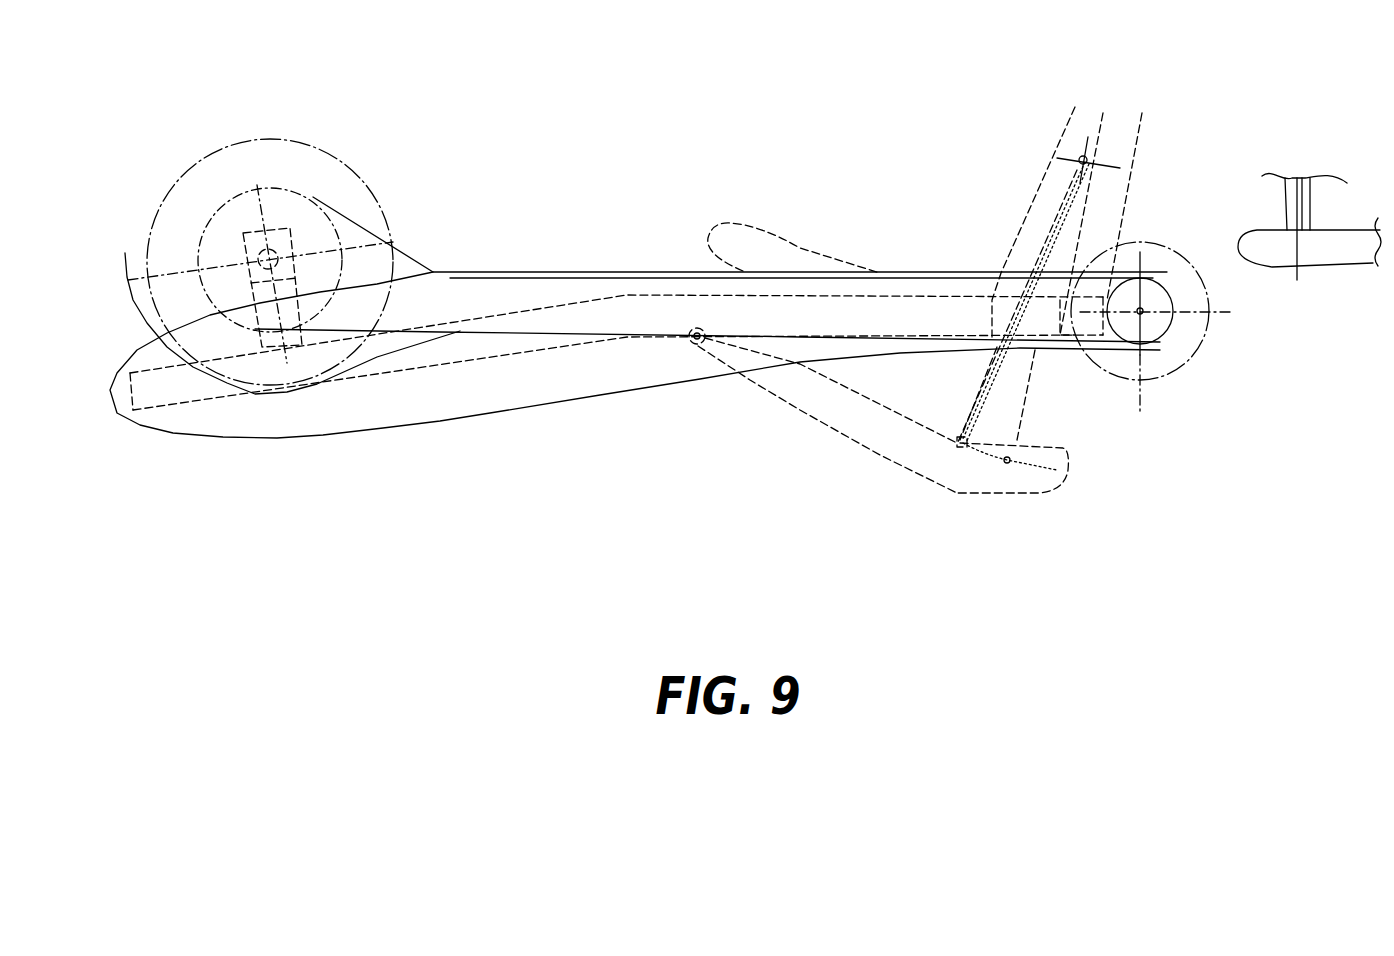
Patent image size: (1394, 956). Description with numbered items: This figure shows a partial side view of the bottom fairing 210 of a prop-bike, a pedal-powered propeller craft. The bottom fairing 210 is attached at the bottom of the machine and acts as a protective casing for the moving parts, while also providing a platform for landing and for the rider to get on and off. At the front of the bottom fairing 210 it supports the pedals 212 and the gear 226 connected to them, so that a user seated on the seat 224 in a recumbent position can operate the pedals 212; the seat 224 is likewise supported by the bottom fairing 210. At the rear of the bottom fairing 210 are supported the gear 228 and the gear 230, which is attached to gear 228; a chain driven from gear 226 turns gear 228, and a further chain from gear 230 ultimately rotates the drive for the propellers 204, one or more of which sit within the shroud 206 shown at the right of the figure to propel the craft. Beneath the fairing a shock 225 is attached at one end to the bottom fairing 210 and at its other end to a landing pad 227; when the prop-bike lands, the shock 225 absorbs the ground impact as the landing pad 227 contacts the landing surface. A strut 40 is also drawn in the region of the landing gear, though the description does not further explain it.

The bottom fairing 210 is at (384, 434).
The pedals 212 is at (343, 158).
The gear 226 is at (315, 196).
The seat 224 is at (807, 248).
The strut 40 is at (823, 431).
The landing pad 227 is at (958, 494).
The shock 225 is at (965, 430).
The gear 230 is at (1210, 327).
The gear 228 is at (1160, 340).
The propellers 204 is at (1280, 190).
The shroud 206 is at (1238, 247).